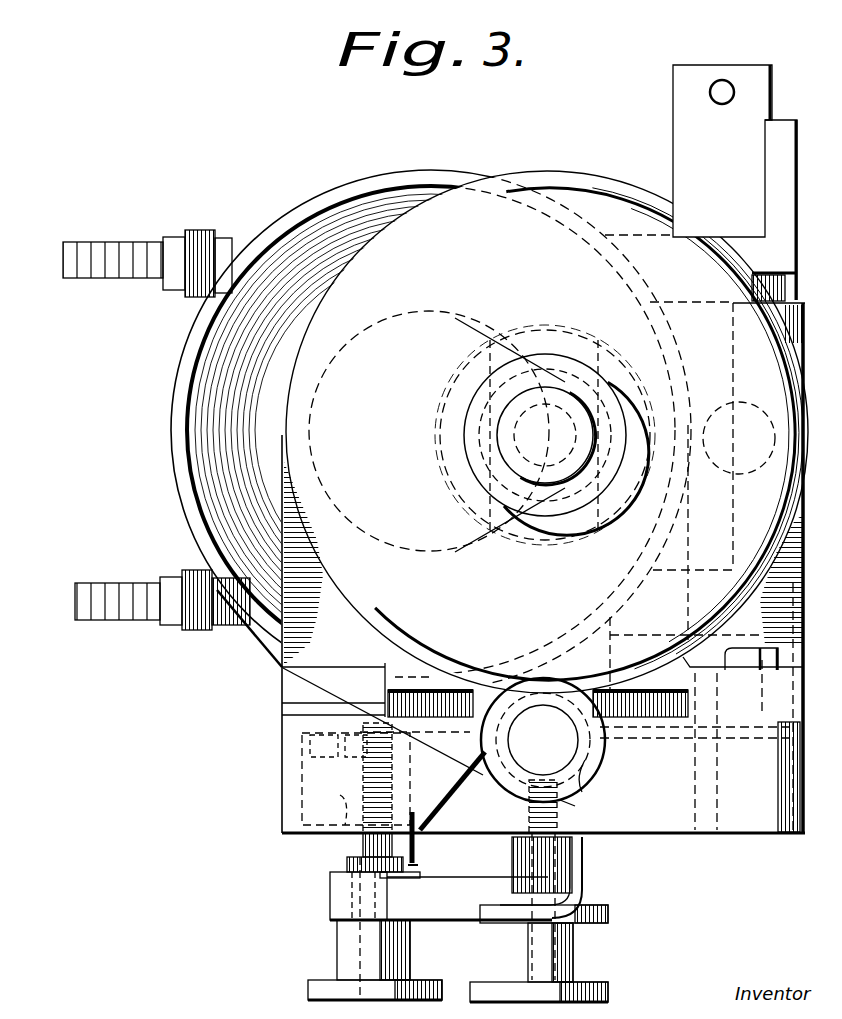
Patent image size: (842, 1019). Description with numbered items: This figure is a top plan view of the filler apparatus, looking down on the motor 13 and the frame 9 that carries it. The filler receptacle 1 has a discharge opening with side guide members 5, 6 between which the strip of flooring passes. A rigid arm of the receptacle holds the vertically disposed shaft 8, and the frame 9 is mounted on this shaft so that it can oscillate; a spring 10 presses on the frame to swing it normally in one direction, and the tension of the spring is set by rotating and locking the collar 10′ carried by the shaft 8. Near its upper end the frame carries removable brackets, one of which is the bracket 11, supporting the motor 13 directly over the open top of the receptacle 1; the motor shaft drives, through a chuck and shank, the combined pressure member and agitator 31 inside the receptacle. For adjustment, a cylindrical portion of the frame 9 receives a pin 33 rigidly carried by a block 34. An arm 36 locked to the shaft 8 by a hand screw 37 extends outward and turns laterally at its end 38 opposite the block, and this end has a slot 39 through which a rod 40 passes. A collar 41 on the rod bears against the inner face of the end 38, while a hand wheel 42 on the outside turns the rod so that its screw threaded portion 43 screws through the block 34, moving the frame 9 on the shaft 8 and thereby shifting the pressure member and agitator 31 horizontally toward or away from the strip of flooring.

The filler receptacle 1 is at (373, 190).
The side guide member 5 is at (243, 238).
The side guide member 6 is at (227, 632).
The shaft 8 is at (543, 829).
The frame 9 is at (731, 740).
The spring 10 is at (450, 808).
The collar 10′ is at (582, 775).
The removable bracket 11 is at (337, 620).
The motor 13 is at (547, 500).
The combined pressure member and agitator 31 is at (447, 448).
The pin 33 is at (330, 822).
The block 34 is at (355, 790).
The arm 36 is at (562, 872).
The hand screw 37 is at (565, 945).
The laterally turned end 38 is at (484, 878).
The slot 39 is at (353, 912).
The rod 40 is at (330, 900).
The collar 41 is at (347, 860).
The hand wheel 42 is at (350, 957).
The screw threaded portion 43 is at (330, 772).